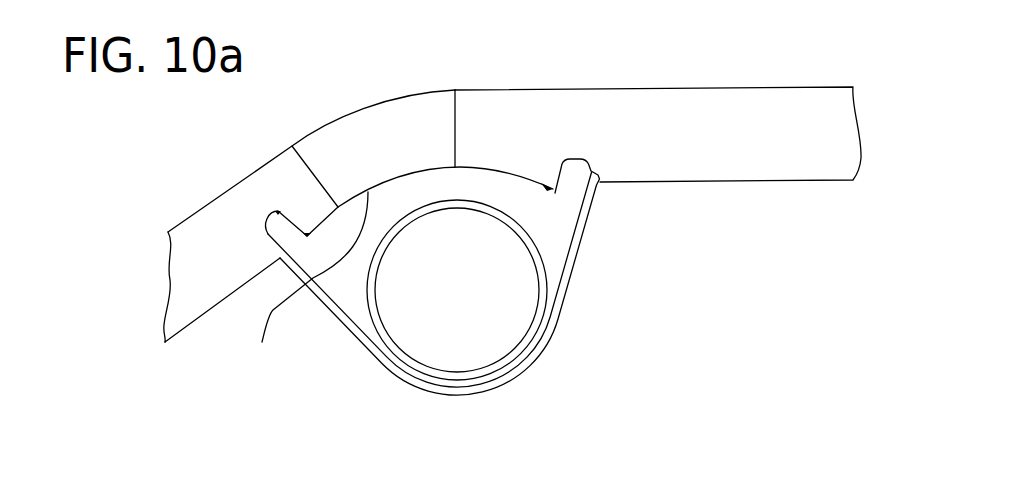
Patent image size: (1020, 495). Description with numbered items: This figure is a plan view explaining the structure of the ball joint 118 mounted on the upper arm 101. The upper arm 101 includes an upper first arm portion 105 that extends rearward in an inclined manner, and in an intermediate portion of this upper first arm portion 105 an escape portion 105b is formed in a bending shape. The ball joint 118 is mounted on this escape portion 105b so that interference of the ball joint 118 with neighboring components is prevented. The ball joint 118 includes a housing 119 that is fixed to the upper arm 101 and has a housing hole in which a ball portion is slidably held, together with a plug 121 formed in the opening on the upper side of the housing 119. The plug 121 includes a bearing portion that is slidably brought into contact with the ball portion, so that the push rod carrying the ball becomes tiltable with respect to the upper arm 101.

The upper arm 101 is at (763, 117).
The upper first arm portion 105 is at (565, 103).
The escape portion 105b is at (285, 291).
The ball joint 118 is at (340, 350).
The housing 119 is at (558, 310).
The plug 121 is at (507, 278).